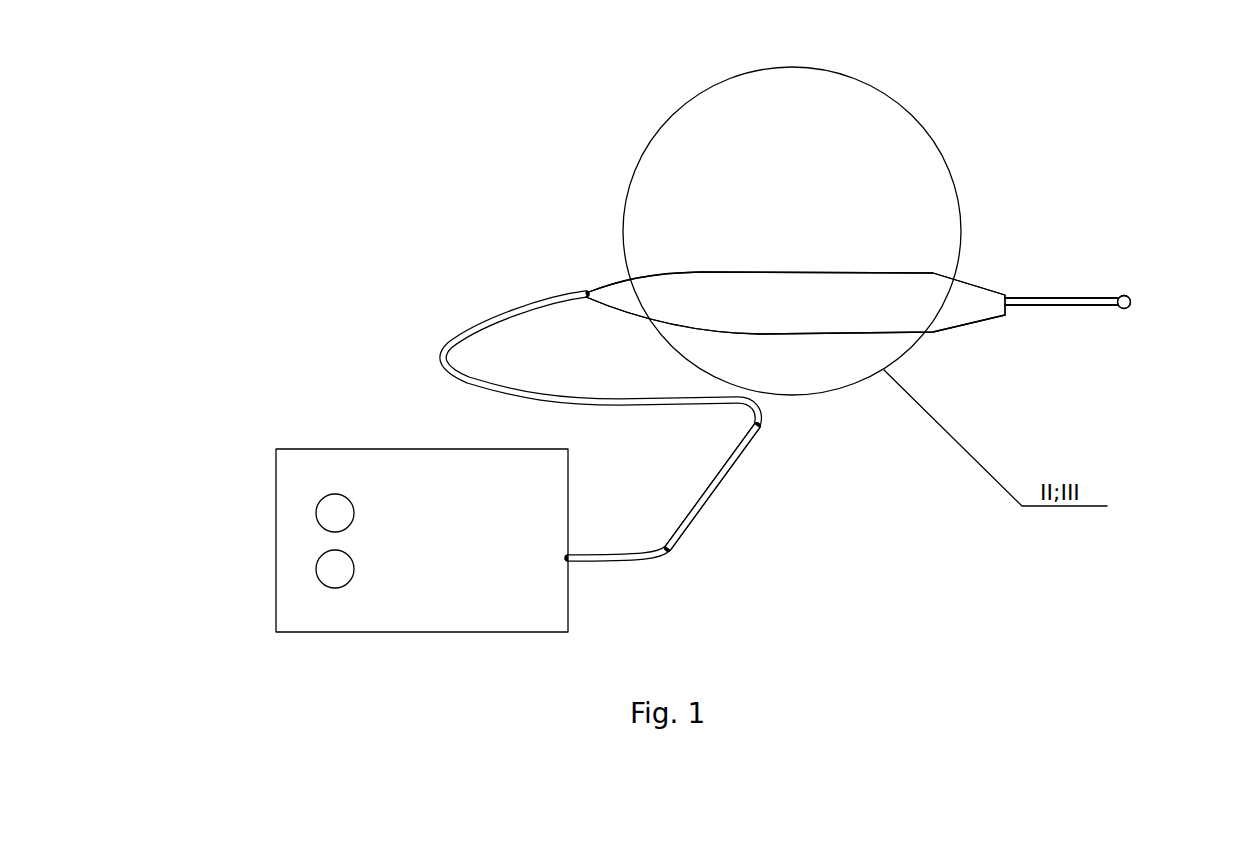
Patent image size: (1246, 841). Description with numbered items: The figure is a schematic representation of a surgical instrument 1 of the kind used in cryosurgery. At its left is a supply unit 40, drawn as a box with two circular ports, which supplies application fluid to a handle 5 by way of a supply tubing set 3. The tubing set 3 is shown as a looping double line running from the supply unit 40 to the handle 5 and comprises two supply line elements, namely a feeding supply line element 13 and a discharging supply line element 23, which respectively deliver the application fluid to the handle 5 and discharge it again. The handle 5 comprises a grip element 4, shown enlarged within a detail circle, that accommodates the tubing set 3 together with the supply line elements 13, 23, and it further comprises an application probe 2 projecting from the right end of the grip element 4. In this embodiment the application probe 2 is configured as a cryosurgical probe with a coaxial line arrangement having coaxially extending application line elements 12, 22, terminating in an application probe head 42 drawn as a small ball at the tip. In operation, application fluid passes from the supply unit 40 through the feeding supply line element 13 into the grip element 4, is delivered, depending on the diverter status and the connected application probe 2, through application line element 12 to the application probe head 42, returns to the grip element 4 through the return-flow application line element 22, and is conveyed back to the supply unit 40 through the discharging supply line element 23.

The surgical instrument 1 is at (515, 212).
The application probe 2 is at (1052, 297).
The supply tubing set 3 is at (447, 340).
The grip element 4 is at (808, 288).
The handle 5 is at (871, 288).
The application line element 12 is at (1087, 305).
The return-flow application line element 22 is at (1092, 357).
The feeding supply line element 13 is at (703, 522).
The discharging supply line element 23 is at (717, 495).
The supply unit 40 is at (288, 489).
The application probe head 42 is at (1130, 298).